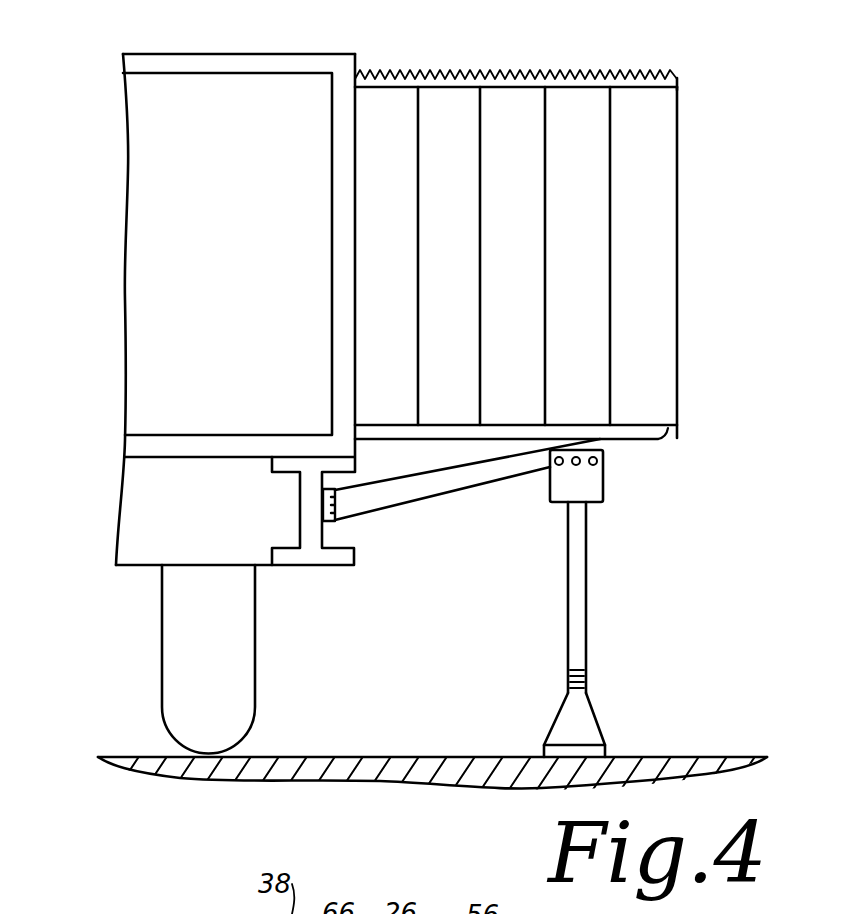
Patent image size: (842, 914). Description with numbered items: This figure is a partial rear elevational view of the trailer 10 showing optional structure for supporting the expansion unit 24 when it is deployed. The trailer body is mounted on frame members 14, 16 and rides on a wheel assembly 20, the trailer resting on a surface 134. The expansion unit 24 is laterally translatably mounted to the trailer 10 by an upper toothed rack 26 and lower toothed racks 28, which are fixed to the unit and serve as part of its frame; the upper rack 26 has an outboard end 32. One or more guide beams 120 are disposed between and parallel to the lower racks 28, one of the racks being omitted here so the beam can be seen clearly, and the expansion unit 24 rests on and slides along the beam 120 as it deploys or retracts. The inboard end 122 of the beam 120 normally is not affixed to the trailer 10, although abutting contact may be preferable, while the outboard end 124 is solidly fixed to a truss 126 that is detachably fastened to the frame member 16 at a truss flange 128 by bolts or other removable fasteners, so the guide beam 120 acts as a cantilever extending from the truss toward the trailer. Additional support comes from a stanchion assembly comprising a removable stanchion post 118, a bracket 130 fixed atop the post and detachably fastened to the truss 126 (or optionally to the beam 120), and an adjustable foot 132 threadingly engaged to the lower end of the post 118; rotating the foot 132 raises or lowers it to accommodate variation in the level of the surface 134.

The trailer 10 is at (343, 46).
The frame member 14 is at (125, 528).
The frame member 16 is at (318, 565).
The wheel assembly 20 is at (170, 687).
The expansion unit 24 is at (575, 116).
The upper toothed rack 26 is at (466, 82).
The lower toothed rack 28 is at (662, 438).
The outboard end 32 is at (678, 80).
The stanchion post 118 is at (580, 588).
The guide beam 120 is at (503, 430).
The inboard end 122 is at (377, 430).
The outboard end 124 is at (640, 428).
The truss 126 is at (463, 482).
The truss flange 128 is at (324, 522).
The bracket 130 is at (603, 492).
The adjustable foot 132 is at (585, 725).
The surface 134 is at (383, 755).